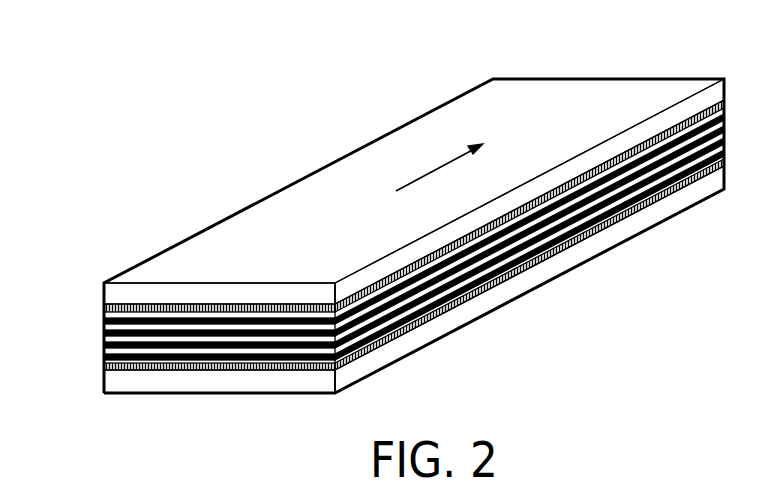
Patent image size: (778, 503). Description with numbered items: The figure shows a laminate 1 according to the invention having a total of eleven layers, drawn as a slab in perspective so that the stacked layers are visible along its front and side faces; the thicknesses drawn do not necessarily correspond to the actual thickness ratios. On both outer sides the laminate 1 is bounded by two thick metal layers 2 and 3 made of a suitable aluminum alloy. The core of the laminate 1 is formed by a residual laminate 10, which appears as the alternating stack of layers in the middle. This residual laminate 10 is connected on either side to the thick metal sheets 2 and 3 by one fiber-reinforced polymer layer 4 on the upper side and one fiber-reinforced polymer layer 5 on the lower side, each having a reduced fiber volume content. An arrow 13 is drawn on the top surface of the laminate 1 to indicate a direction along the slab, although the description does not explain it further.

The laminate 1 is at (381, 234).
The thick metal layer 2 is at (110, 293).
The thick metal layer 3 is at (110, 385).
The fiber-reinforced polymer layer 4 is at (103, 310).
The fiber-reinforced polymer layer 5 is at (103, 366).
The residual laminate 10 is at (100, 314).
The direction arrow 13 is at (439, 167).